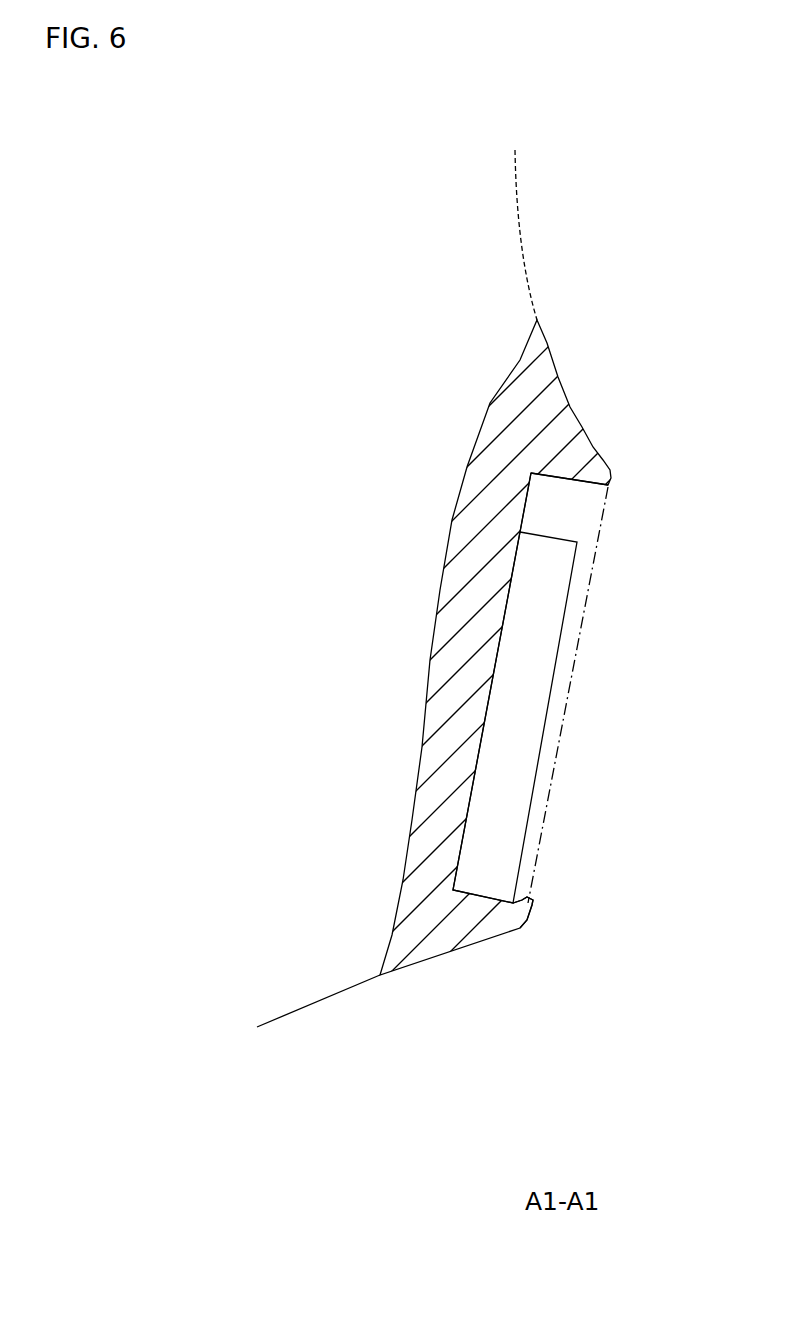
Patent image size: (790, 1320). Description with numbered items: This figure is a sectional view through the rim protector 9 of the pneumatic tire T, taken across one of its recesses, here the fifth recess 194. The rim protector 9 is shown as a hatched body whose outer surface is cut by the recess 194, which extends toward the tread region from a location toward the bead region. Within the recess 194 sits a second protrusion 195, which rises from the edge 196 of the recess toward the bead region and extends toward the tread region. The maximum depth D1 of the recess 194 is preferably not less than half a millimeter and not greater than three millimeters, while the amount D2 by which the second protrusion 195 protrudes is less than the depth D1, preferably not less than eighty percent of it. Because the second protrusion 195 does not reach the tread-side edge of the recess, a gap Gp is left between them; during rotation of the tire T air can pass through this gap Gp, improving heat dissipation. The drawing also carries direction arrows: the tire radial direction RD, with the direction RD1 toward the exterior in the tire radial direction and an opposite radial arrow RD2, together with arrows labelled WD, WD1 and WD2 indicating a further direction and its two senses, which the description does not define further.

The rim protector 9 is at (628, 484).
The fifth recess 194 is at (557, 699).
The second protrusion 195 is at (545, 612).
The edge toward the bead region 196 is at (593, 490).
The gap Gp is at (567, 496).
The pneumatic tire T is at (413, 987).
The maximum depth of recess D1 is at (458, 760).
The protrusion amount of second protrusion D2 is at (447, 792).
The width direction WD is at (288, 447).
The width direction 1 WD1 is at (305, 379).
The width direction 2 WD2 is at (235, 379).
The tire radial direction RD is at (251, 493).
The exterior in tire radial direction RD1 is at (251, 615).
The radial direction 2 RD2 is at (251, 703).